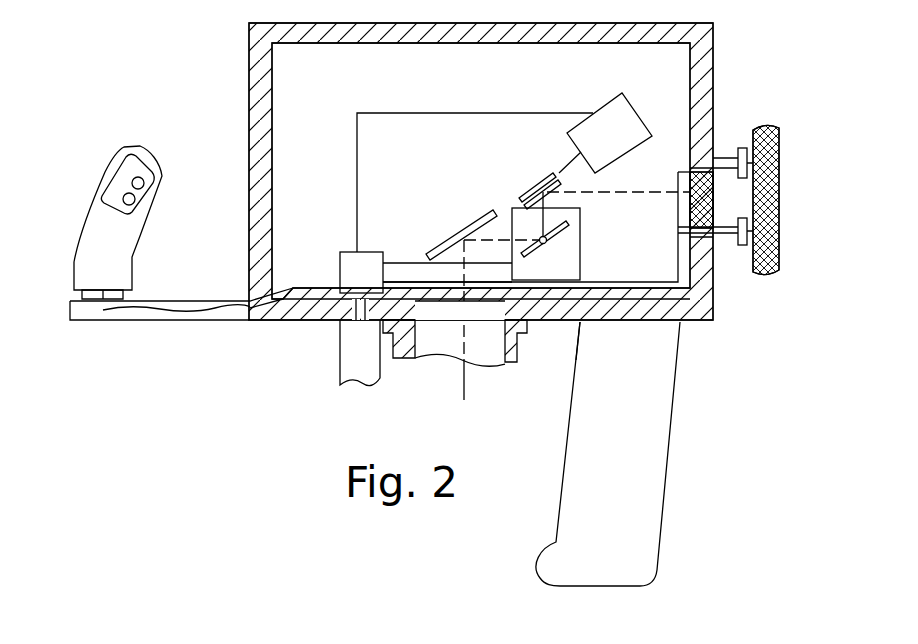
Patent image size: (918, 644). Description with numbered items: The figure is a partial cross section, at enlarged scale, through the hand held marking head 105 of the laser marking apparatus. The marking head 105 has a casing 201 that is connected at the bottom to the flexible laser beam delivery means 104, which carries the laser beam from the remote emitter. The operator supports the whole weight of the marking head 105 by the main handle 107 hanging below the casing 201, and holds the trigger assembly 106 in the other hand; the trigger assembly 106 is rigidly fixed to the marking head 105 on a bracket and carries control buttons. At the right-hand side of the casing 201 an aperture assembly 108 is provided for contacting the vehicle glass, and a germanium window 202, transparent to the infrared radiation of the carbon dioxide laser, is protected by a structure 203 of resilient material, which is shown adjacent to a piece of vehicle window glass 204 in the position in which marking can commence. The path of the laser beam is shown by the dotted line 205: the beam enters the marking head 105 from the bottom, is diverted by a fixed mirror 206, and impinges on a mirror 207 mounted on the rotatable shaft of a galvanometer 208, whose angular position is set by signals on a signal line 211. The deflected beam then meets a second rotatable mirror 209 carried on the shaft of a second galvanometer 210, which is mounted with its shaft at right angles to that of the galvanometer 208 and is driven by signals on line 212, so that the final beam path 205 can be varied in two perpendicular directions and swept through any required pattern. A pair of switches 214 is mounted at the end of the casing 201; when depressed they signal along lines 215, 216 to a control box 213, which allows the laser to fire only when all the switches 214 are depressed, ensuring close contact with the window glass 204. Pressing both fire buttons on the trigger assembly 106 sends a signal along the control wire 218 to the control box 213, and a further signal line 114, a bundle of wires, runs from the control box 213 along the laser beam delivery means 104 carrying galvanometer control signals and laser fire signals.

The laser beam delivery means 104 is at (527, 348).
The marking head 105 is at (247, 470).
The trigger assembly 106 is at (76, 224).
The main handle 107 is at (647, 407).
The aperture assembly 108 is at (740, 148).
The signal line 114 is at (352, 369).
The casing 201 is at (256, 165).
The germanium window 202 is at (700, 170).
The structure 203 is at (723, 238).
The window glass 204 is at (767, 196).
The laser beam path 205 is at (638, 188).
The fixed mirror 206 is at (471, 226).
The mirror 207 is at (565, 233).
The galvanometer 208 is at (582, 263).
The second rotatable mirror 209 is at (528, 182).
The second galvanometer 210 is at (594, 112).
The signal line 211 is at (401, 262).
The signal line 212 is at (431, 112).
The control box 213 is at (348, 270).
The switches 214 is at (748, 168).
The signal line 215 is at (613, 323).
The signal line 216 is at (647, 290).
The control wire 218 is at (306, 292).